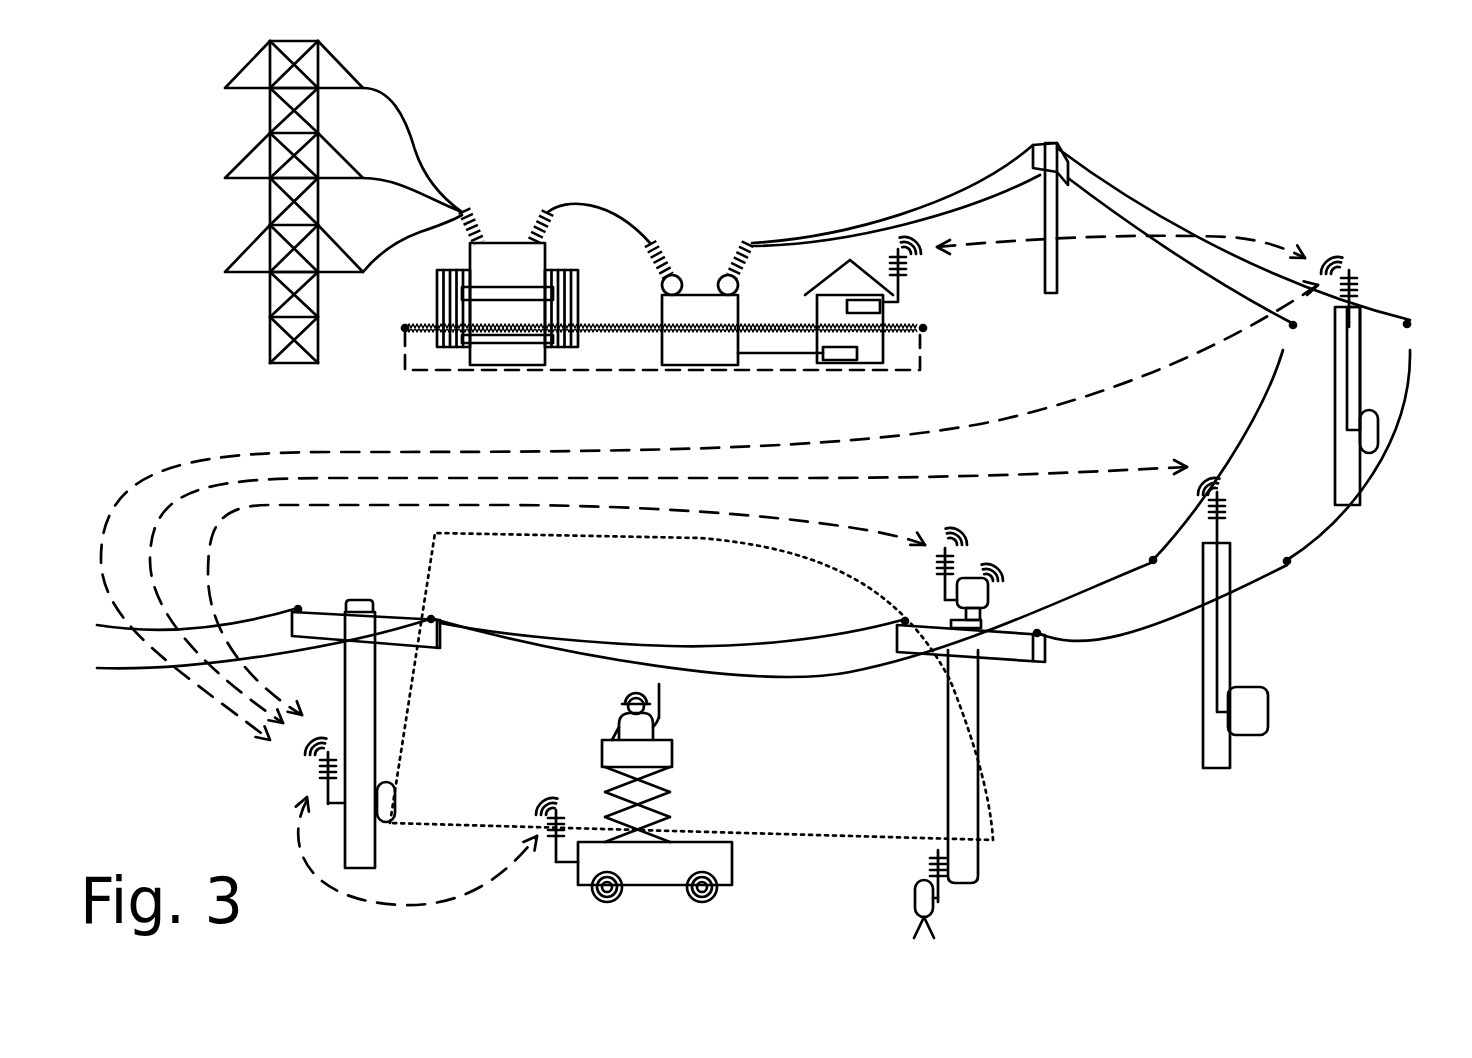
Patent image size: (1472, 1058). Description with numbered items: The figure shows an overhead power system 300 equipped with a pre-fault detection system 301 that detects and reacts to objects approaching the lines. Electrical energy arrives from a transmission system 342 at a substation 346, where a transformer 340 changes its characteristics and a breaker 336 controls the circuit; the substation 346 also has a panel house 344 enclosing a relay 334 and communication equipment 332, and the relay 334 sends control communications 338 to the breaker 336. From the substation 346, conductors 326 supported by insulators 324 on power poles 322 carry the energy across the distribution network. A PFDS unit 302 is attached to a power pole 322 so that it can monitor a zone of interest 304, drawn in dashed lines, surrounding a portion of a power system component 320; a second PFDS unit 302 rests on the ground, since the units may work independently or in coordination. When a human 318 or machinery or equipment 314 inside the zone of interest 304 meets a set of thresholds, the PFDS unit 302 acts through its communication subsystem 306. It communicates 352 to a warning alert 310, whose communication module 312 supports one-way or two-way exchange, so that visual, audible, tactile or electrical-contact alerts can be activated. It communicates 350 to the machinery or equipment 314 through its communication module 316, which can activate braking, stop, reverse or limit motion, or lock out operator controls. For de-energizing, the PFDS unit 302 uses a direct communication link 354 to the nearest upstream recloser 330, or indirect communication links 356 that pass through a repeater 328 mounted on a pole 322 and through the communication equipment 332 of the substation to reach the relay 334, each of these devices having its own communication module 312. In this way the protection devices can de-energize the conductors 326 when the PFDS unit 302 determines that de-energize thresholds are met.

The overhead power system 300 is at (1325, 84).
The pre-fault detection system 301 is at (1325, 888).
The PFDS unit 302 is at (388, 823).
The zone of interest 304 is at (790, 838).
The communication subsystem 306 is at (322, 773).
The warning alert 310 is at (990, 593).
The communication module 312 is at (903, 278).
The machinery or equipment 314 is at (732, 885).
The communication module 316 is at (557, 862).
The human 318 is at (660, 720).
The power system component 320 is at (786, 643).
The power pole 322 is at (1057, 293).
The insulator 324 is at (297, 611).
The conductor 326 is at (997, 157).
The repeater 328 is at (1368, 453).
The recloser 330 is at (1268, 712).
The communication equipment 332 is at (865, 313).
The relay 334 is at (850, 361).
The breaker 336 is at (662, 366).
The control communications 338 is at (773, 353).
The transformer 340 is at (507, 366).
The transmission system 342 is at (230, 87).
The panel house 344 is at (883, 362).
The substation 346 is at (404, 334).
The communication to machinery or equipment 350 is at (292, 832).
The communication to warning alert 352 is at (860, 520).
The direct communication link 354 is at (1076, 470).
The communication link 356 is at (365, 450).